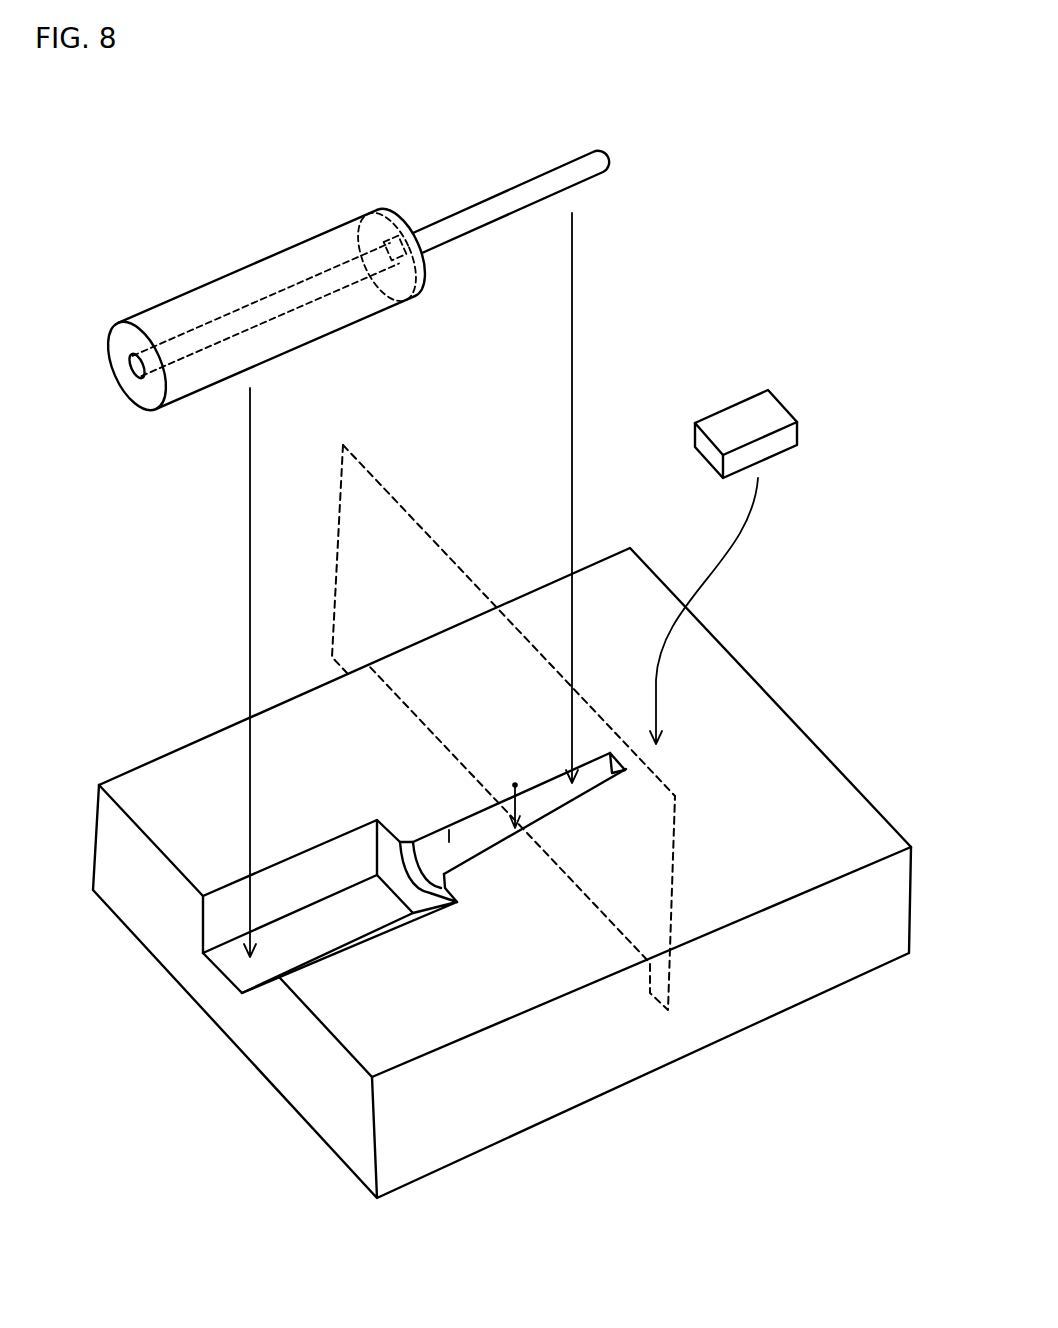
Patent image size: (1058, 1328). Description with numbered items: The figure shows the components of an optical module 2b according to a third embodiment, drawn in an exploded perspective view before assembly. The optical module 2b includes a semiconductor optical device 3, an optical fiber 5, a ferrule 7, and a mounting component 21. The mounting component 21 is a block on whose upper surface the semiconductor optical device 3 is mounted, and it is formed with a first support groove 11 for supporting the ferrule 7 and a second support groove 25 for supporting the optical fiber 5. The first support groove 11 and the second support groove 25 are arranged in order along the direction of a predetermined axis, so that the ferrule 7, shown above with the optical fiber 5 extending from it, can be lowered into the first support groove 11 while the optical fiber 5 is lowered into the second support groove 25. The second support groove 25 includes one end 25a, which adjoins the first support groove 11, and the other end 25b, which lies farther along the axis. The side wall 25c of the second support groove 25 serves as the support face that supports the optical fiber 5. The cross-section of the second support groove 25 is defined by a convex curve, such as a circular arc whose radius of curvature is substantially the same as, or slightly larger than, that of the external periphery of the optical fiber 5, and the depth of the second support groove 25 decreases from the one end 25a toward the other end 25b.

The optical module 2b is at (802, 120).
The semiconductor optical device 3 is at (773, 408).
The optical fiber 5 is at (493, 193).
The ferrule 7 is at (237, 268).
The first support groove 11 is at (391, 932).
The mounting component 21 is at (488, 1147).
The second support groove 25 is at (568, 803).
The one end 25a is at (428, 866).
The other end 25b is at (628, 760).
The side wall 25c is at (449, 841).